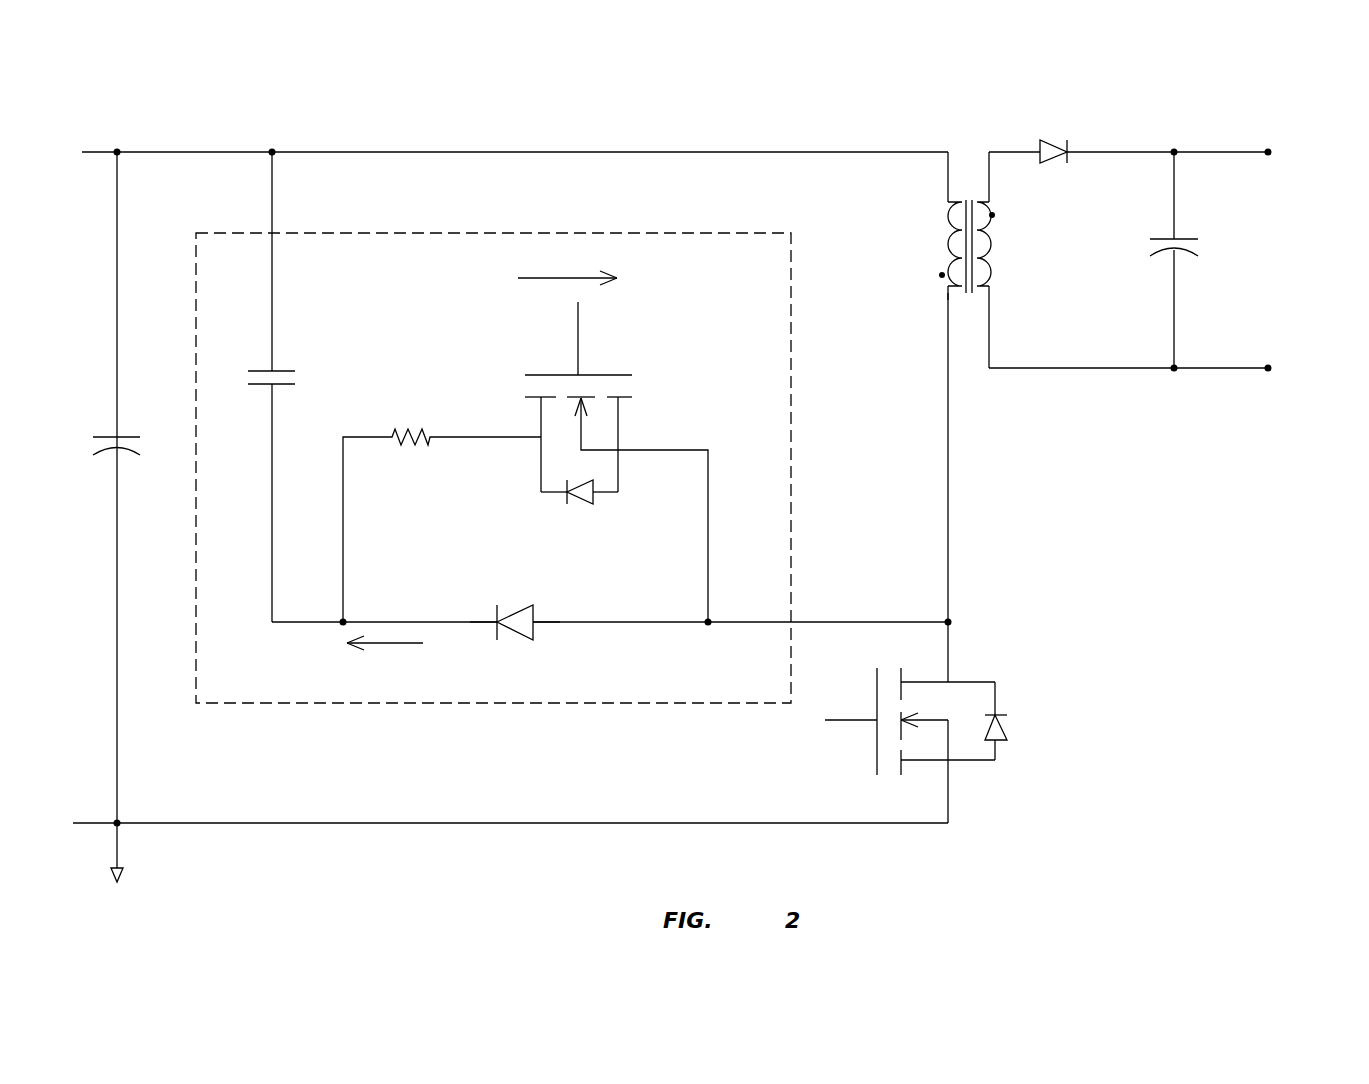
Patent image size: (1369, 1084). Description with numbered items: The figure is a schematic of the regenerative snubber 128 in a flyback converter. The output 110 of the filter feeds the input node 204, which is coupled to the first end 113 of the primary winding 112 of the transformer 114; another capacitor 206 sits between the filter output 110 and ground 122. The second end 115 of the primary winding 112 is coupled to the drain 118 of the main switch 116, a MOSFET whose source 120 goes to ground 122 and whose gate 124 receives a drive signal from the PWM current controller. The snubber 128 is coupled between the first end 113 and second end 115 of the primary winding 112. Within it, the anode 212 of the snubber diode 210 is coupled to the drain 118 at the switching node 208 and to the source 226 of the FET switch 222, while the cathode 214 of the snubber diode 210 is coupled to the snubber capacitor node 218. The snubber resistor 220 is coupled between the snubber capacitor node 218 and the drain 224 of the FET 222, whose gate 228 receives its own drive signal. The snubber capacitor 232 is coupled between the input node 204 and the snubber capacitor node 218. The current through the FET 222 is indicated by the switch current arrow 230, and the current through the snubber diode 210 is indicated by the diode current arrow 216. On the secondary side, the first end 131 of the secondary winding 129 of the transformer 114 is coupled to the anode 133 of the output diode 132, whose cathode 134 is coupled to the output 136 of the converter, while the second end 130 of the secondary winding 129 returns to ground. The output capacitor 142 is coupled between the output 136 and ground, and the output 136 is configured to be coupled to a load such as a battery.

The output of the filter 110 is at (100, 150).
The node Vin 204 is at (275, 148).
The ground 122 is at (121, 880).
The capacitor 206 is at (113, 437).
The regenerative snubber 128 is at (513, 230).
The snubber capacitor 232 is at (287, 371).
The node VC4 218 is at (341, 626).
The snubber resistor 220 is at (410, 445).
The gate 228 is at (580, 372).
The drain 224 is at (538, 436).
The source 226 is at (618, 450).
The switch 222 is at (540, 497).
The current iQ2 230 is at (530, 282).
The snubber diode 210 is at (548, 598).
The anode 212 is at (537, 625).
The cathode 214 is at (496, 626).
The current iD2 216 is at (355, 650).
The node VSW 208 is at (950, 618).
The switch 116 is at (1007, 695).
The drain 118 is at (950, 680).
The gate 124 is at (870, 724).
The source 120 is at (950, 762).
The first end of the primary winding 113 is at (935, 152).
The transformer 114 is at (973, 190).
The primary winding 112 is at (955, 262).
The second end of the primary winding 115 is at (945, 312).
The secondary winding 129 is at (985, 255).
The second end of the secondary winding 130 is at (990, 293).
The first end of the secondary winding 131 is at (1000, 150).
The output diode 132 is at (1052, 148).
The anode 133 is at (1043, 158).
The cathode 134 is at (1068, 152).
The output capacitor 142 is at (1180, 238).
The output 136 is at (1272, 150).